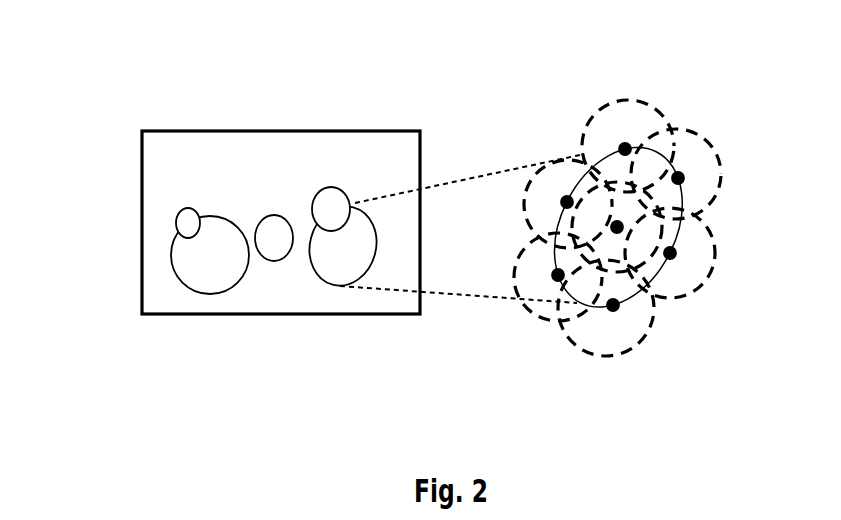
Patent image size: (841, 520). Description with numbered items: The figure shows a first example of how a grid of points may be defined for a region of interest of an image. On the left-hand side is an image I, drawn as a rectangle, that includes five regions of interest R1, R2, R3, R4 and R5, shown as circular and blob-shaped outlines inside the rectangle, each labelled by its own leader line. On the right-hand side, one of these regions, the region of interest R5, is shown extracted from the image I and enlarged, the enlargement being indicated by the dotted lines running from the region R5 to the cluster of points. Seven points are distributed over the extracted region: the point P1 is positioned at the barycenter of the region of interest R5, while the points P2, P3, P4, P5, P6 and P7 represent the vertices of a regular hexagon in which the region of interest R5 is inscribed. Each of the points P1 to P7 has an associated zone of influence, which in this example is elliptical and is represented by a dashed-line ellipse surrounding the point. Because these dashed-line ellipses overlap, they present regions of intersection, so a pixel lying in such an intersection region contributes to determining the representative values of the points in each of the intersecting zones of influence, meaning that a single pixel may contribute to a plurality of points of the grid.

The image I is at (142, 262).
The region of interest R1 is at (328, 188).
The region of interest R2 is at (272, 216).
The region of interest R3 is at (177, 210).
The region of interest R4 is at (203, 293).
The region of interest R5 is at (328, 285).
The point of the grid P1 is at (617, 227).
The point of the grid P2 is at (670, 253).
The point of the grid P3 is at (613, 305).
The point of the grid P4 is at (558, 275).
The point of the grid P5 is at (567, 202).
The point of the grid P6 is at (625, 149).
The point of the grid P7 is at (678, 178).